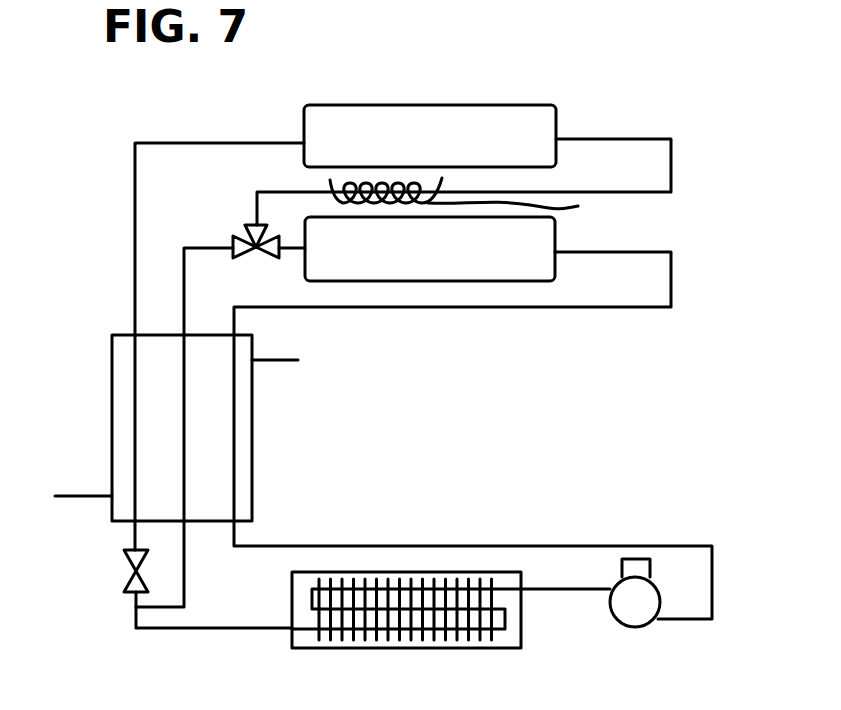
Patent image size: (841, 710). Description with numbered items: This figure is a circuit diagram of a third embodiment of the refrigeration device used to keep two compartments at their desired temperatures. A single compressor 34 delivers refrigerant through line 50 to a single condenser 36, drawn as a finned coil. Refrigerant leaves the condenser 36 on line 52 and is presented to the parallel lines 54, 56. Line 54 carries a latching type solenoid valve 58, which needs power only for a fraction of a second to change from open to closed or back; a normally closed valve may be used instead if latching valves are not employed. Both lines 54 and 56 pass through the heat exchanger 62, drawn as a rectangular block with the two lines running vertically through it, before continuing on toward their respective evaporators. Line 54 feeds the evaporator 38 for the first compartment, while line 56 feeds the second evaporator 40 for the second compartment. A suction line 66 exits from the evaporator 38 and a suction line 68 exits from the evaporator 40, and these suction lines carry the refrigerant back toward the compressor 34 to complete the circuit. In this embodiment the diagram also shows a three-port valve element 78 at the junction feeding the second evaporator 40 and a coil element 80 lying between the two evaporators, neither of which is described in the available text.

The compressor 34 is at (645, 622).
The condenser 36 is at (485, 650).
The evaporator 38 is at (545, 120).
The second evaporator 40 is at (545, 268).
The line 50 is at (565, 591).
The line 52 is at (222, 630).
The line 54 is at (135, 268).
The line 56 is at (184, 296).
The latching type solenoid valve 58 is at (124, 584).
The heat exchanger 62 is at (112, 402).
The suction line 66 is at (671, 176).
The suction line 68 is at (671, 293).
The three-way valve 78 is at (257, 262).
The heating coil 80 is at (475, 207).